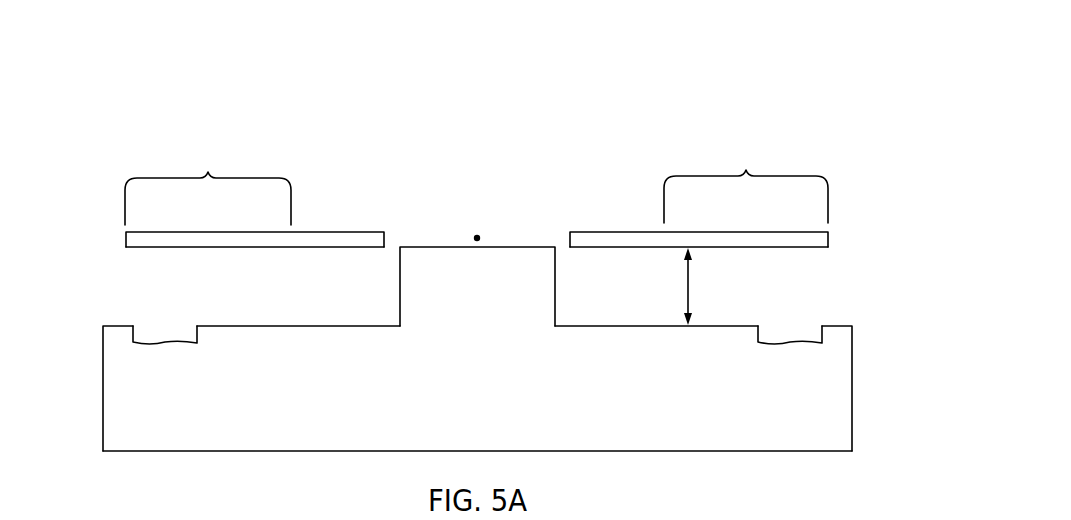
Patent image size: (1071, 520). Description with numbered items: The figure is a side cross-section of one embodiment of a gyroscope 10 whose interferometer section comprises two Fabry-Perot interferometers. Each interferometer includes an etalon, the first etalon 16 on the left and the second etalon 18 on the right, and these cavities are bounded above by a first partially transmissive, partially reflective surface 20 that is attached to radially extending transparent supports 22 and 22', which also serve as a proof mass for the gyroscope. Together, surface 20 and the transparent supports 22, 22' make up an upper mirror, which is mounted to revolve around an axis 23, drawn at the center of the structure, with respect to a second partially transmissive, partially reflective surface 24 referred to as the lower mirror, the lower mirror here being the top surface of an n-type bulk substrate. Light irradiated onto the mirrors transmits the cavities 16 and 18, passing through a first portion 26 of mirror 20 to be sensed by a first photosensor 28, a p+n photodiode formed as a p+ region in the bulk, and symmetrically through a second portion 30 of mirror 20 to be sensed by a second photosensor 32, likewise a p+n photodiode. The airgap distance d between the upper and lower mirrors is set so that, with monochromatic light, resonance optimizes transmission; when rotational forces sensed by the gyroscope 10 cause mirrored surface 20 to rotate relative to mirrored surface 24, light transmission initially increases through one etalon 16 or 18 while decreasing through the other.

The gyroscope 10 is at (767, 89).
The etalon 16 is at (265, 299).
The etalon 18 is at (752, 299).
The first partially transmissive, partially reflective surface 20 is at (336, 219).
The radially extending transparent support 22 is at (213, 243).
The radially extending transparent support 22' is at (740, 243).
The axis 23 is at (477, 221).
The second partially transmissive, partially reflective surface 24 is at (340, 325).
The first portion of mirror 26 is at (208, 184).
The first photosensor 28 is at (137, 391).
The second portion of mirror 30 is at (746, 183).
The second photosensor 32 is at (819, 392).